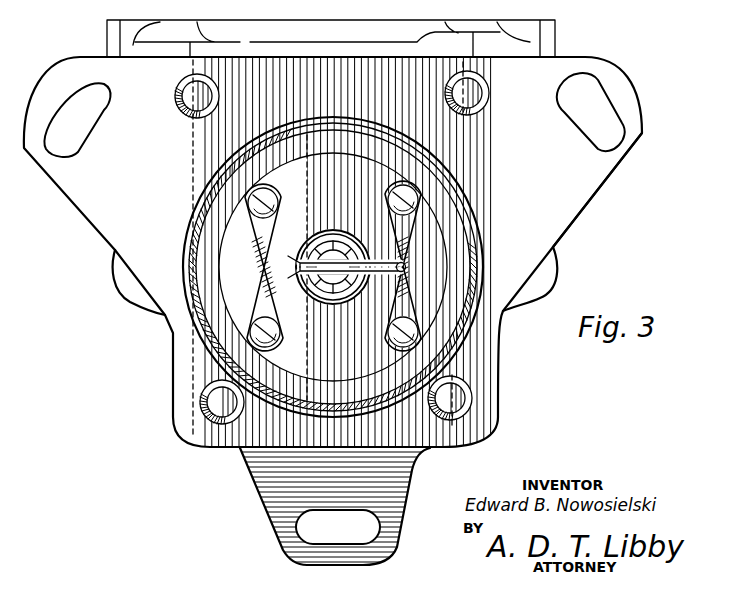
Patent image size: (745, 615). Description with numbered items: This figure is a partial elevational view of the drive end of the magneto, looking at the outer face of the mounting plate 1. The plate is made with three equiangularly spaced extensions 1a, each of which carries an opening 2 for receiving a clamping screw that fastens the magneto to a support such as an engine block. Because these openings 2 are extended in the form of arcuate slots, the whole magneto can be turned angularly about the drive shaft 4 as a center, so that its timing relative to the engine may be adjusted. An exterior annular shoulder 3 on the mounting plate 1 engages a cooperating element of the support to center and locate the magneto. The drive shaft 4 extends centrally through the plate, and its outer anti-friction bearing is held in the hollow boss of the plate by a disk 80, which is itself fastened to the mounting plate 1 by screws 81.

The mounting plate 1 is at (162, 380).
The extensions 1a is at (587, 192).
The openings 2 is at (303, 527).
The annular shoulder 3 is at (183, 254).
The drive shaft 4 is at (318, 300).
The disk 80 is at (226, 310).
The screws 81 is at (386, 337).